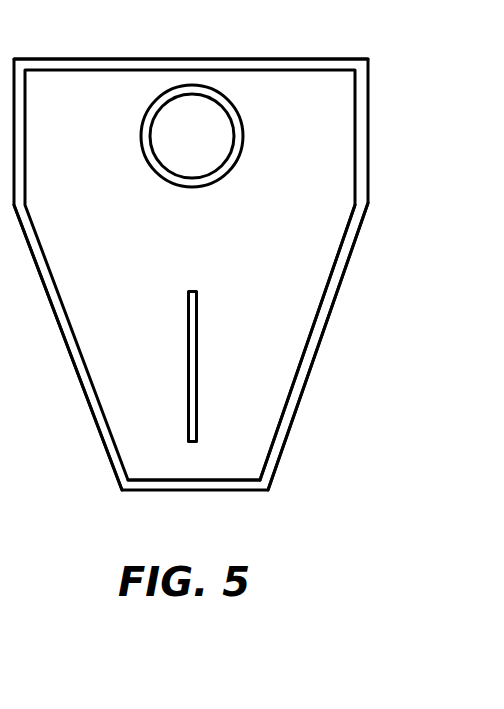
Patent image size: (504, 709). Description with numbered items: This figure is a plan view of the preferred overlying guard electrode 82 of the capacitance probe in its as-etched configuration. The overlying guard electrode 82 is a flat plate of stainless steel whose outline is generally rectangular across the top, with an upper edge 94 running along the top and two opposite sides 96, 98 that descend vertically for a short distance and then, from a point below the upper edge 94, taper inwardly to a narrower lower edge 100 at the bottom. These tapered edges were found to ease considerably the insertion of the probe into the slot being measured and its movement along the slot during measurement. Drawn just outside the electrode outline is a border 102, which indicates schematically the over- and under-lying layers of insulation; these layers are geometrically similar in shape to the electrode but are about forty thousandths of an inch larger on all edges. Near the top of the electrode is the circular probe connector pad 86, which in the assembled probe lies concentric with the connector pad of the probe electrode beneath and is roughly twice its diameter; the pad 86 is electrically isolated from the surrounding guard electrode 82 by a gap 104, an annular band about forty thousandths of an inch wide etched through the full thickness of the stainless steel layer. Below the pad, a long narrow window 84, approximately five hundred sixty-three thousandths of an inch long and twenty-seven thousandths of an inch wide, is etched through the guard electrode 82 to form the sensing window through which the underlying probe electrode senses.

The overlying guard electrode 82 is at (105, 380).
The window 84 is at (198, 383).
The probe connector pad 86 is at (192, 105).
The upper edge 94 is at (110, 70).
The side 96 is at (322, 310).
The side 98 is at (68, 315).
The lower edge 100 is at (238, 481).
The border 102 is at (300, 375).
The gap 104 is at (242, 142).